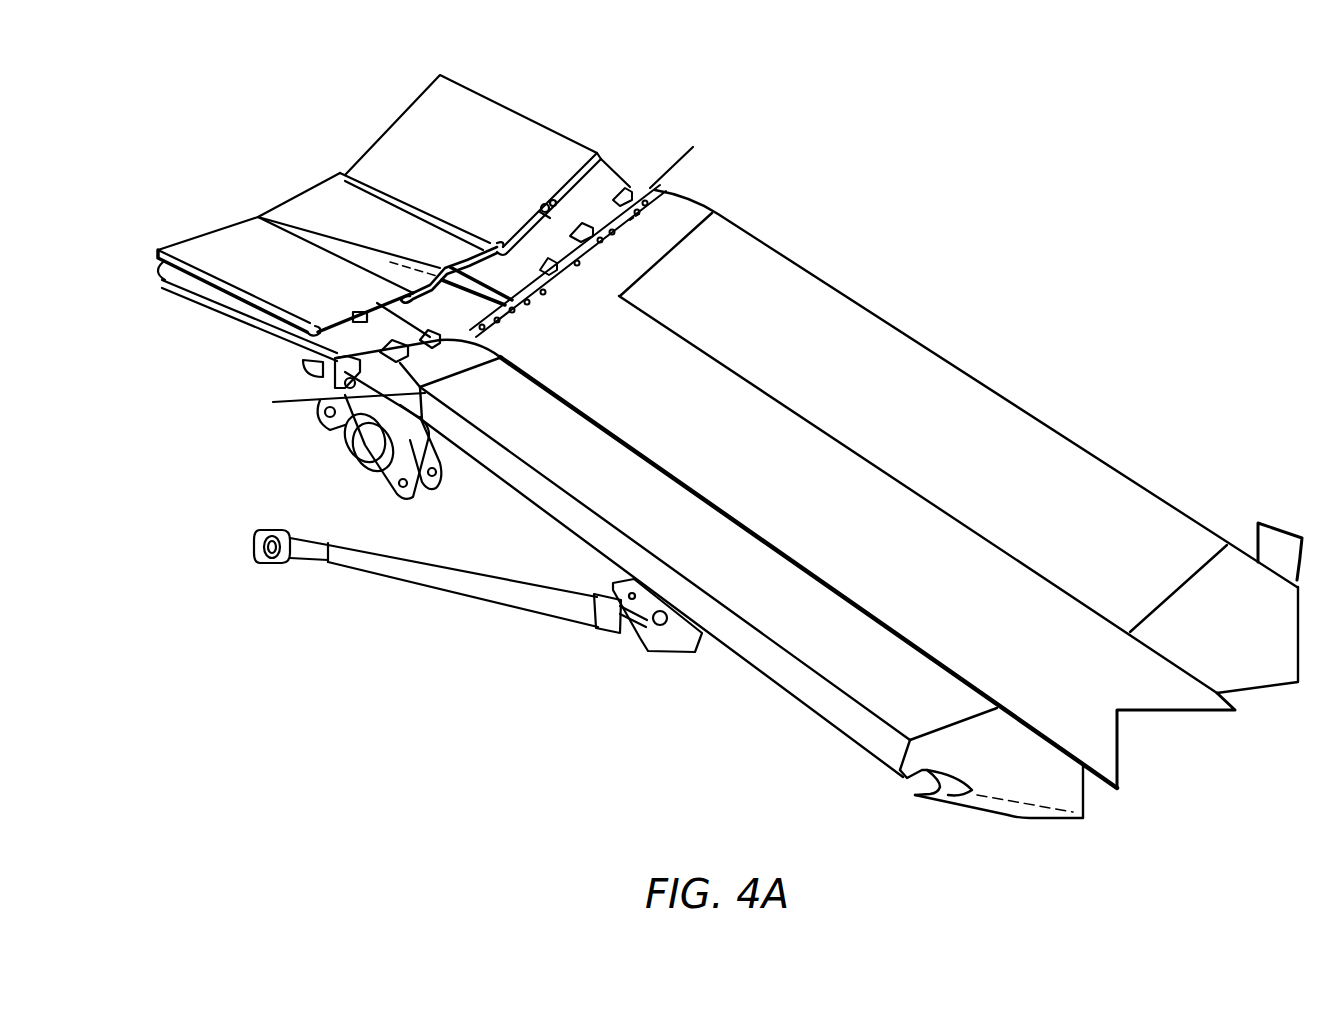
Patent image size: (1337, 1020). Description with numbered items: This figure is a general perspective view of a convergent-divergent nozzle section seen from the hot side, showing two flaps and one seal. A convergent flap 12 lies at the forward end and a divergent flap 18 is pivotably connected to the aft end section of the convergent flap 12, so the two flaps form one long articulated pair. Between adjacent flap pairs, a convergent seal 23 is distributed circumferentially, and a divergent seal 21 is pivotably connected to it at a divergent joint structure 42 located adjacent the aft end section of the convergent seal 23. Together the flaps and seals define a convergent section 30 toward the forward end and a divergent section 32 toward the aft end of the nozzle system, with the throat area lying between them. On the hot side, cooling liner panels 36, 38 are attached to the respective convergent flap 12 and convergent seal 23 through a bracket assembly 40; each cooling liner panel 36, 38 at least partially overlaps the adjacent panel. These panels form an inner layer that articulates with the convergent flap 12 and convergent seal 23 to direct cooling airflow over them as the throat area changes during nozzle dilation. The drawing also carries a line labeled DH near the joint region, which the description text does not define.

The convergent flap 12 is at (369, 180).
The divergent flap 18 is at (1040, 433).
The divergent seal 21 is at (1189, 713).
The convergent seal 23 is at (313, 207).
The convergent section 30 is at (183, 369).
The divergent section 32 is at (506, 704).
The cooling liner panel 36 is at (486, 102).
The cooling liner panel 38 is at (328, 183).
The bracket assembly 40 is at (360, 312).
The divergent joint structure 42 is at (630, 135).
The deck height line DH is at (680, 163).